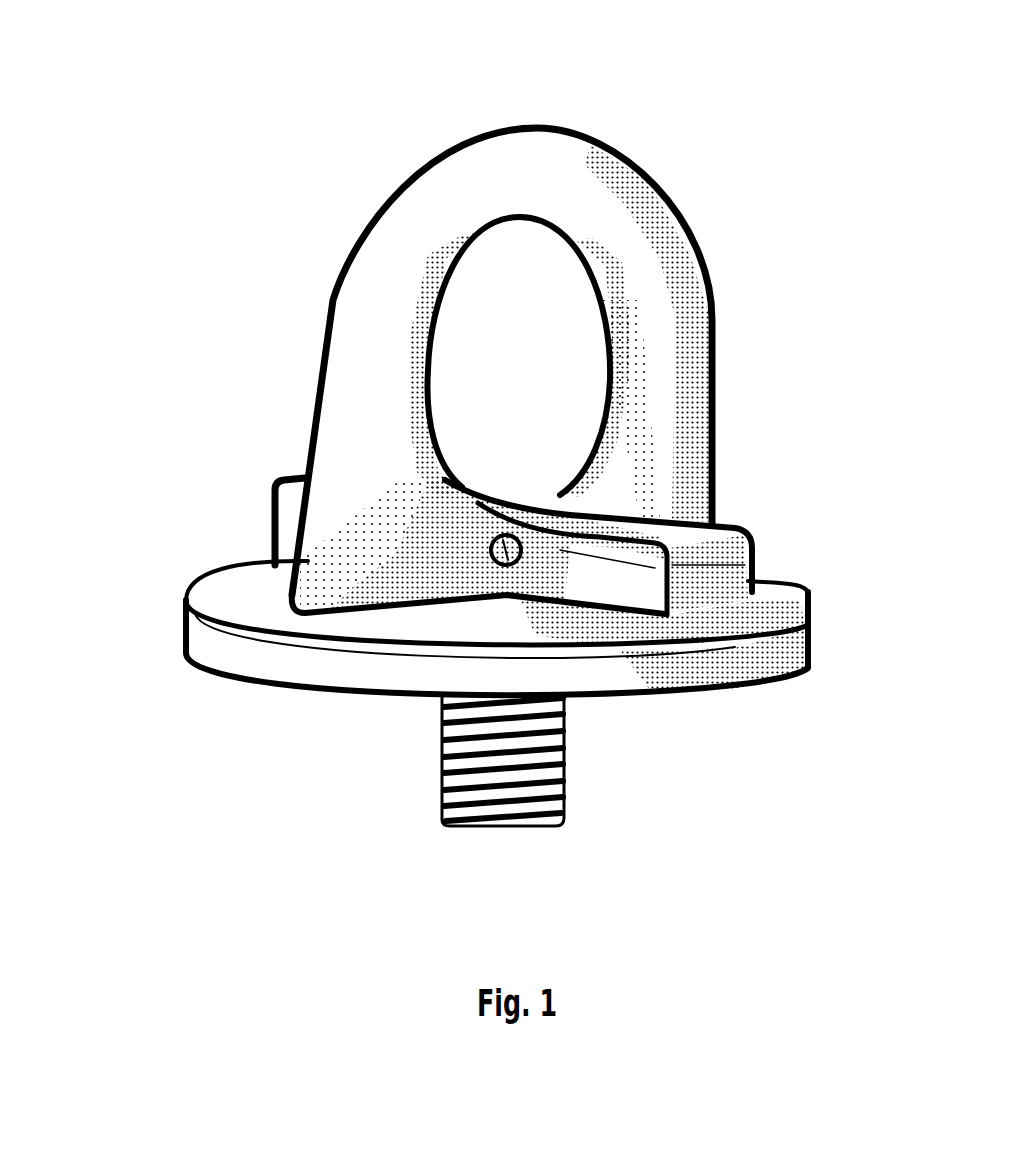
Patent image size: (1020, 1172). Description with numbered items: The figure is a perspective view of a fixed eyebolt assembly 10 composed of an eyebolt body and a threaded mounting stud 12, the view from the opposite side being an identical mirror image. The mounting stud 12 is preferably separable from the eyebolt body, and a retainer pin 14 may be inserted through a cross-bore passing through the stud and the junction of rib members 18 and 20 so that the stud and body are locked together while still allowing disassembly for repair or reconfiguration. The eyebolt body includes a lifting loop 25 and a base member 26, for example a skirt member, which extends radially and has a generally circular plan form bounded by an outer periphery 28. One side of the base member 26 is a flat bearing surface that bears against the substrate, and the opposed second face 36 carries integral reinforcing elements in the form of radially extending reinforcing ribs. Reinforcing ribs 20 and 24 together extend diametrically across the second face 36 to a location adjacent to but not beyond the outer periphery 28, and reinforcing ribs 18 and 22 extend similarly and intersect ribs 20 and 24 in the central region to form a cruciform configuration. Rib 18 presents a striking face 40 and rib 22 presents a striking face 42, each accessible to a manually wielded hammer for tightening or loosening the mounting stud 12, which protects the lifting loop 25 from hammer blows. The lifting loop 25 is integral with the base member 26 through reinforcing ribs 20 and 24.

The fixed eyebolt assembly 10 is at (372, 92).
The mounting stud 12 is at (462, 761).
The retainer pin 14 is at (510, 490).
The reinforcing rib 18 is at (682, 580).
The reinforcing rib 20 is at (280, 567).
The reinforcing rib 22 is at (293, 478).
The reinforcing rib 24 is at (714, 508).
The lifting loop 25 is at (570, 175).
The base member 26 is at (858, 654).
The outer periphery 28 is at (228, 647).
The second face 36 is at (230, 597).
The striking face 40 is at (627, 582).
The striking face 42 is at (272, 502).